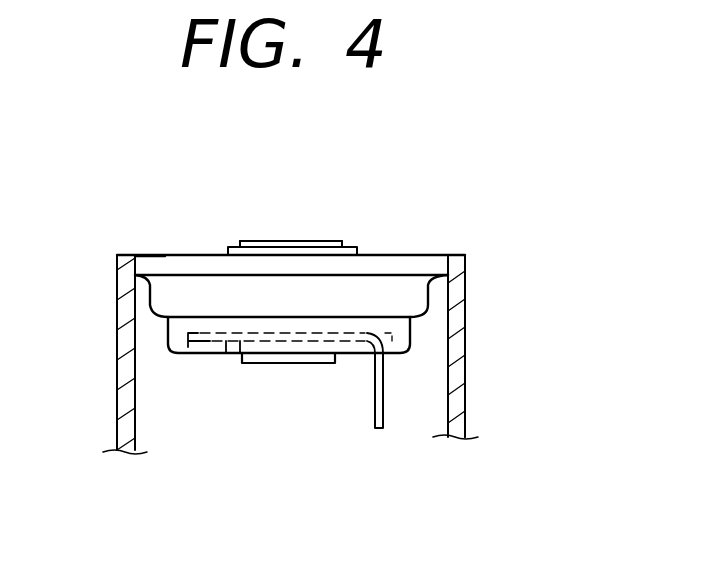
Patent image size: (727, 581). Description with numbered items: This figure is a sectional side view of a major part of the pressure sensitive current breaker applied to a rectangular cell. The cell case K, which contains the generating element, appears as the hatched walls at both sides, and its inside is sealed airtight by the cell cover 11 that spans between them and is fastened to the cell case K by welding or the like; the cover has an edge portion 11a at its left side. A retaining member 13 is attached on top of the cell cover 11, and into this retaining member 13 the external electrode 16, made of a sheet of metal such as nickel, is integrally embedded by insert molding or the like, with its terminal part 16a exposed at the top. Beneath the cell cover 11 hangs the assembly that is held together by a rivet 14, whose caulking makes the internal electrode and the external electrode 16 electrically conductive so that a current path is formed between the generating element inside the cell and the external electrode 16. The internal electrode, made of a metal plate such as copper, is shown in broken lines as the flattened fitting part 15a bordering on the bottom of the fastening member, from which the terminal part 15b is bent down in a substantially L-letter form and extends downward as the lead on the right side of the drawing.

The cell cover 11 is at (423, 251).
The flange of housing 11a is at (140, 253).
The retaining member 13 is at (230, 241).
The rivet 14 is at (283, 369).
The fitting part 15a is at (227, 360).
The terminal part 15b is at (374, 412).
The external electrode 16 is at (283, 242).
The terminal part 16a is at (323, 242).
The cell case K is at (108, 383).